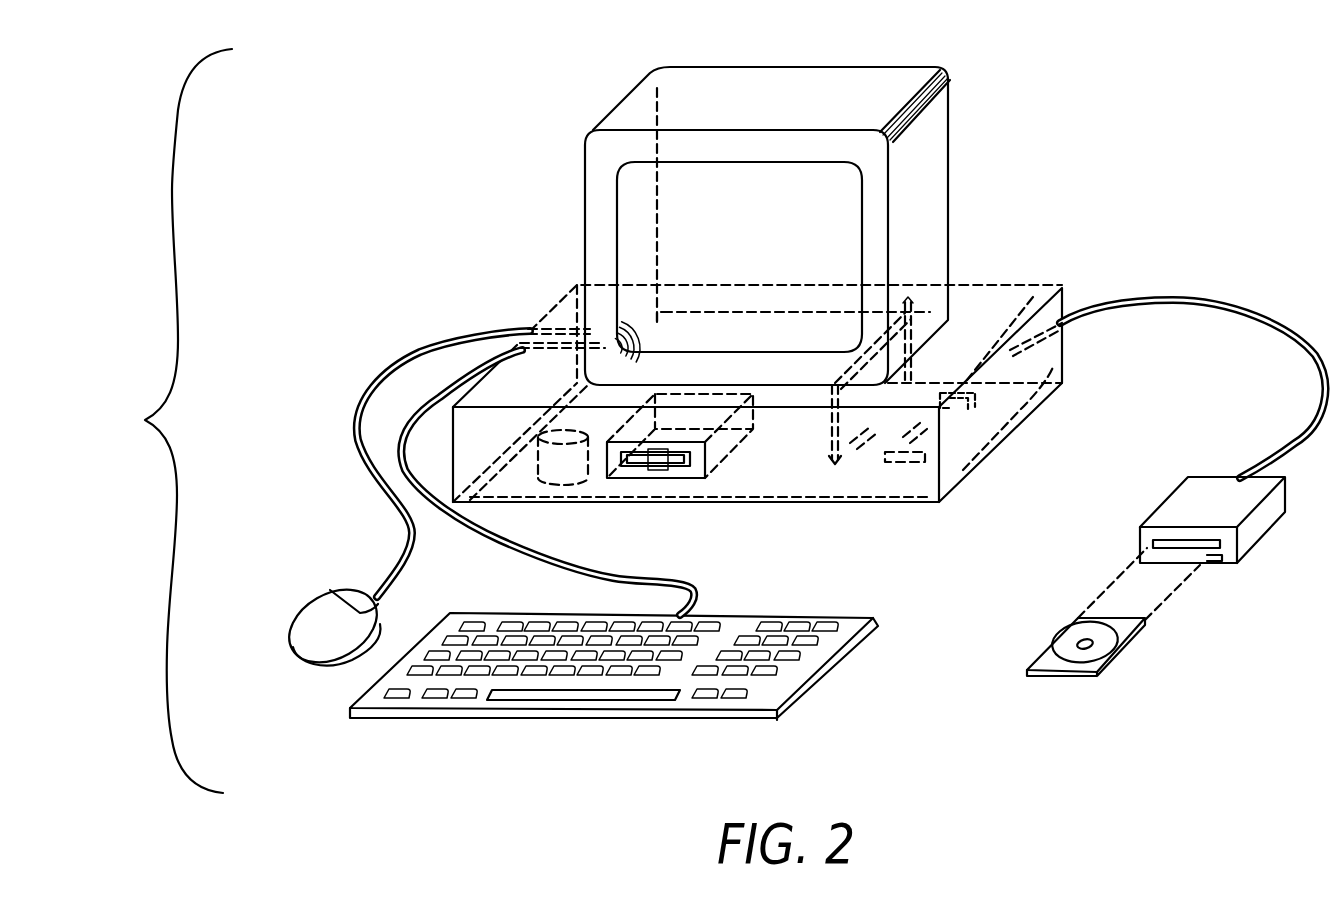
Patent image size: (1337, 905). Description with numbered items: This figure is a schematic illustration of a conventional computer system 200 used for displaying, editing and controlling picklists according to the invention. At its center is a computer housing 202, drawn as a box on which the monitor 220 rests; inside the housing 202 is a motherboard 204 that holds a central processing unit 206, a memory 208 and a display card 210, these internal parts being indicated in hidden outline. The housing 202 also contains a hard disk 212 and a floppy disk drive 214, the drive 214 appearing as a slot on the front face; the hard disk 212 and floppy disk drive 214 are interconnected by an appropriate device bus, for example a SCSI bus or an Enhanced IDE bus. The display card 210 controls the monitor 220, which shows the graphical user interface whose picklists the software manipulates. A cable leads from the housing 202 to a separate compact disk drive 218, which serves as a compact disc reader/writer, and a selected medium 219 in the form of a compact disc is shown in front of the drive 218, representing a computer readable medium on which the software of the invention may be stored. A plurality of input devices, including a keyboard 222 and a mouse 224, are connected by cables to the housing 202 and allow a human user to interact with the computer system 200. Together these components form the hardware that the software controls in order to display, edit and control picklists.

The computer system 200 is at (164, 421).
The computer housing 202 is at (1062, 385).
The motherboard 204 is at (1062, 363).
The central processing unit (CPU) 206 is at (925, 437).
The memory 208 is at (1037, 287).
The display card 210 is at (934, 313).
The hard disk 212 is at (602, 504).
The floppy disk drive 214 is at (683, 475).
The compact disk drive 218 is at (1190, 505).
The selected medium 219 is at (1070, 640).
The monitor 220 is at (937, 147).
The keyboard 222 is at (853, 623).
The mouse 224 is at (313, 620).